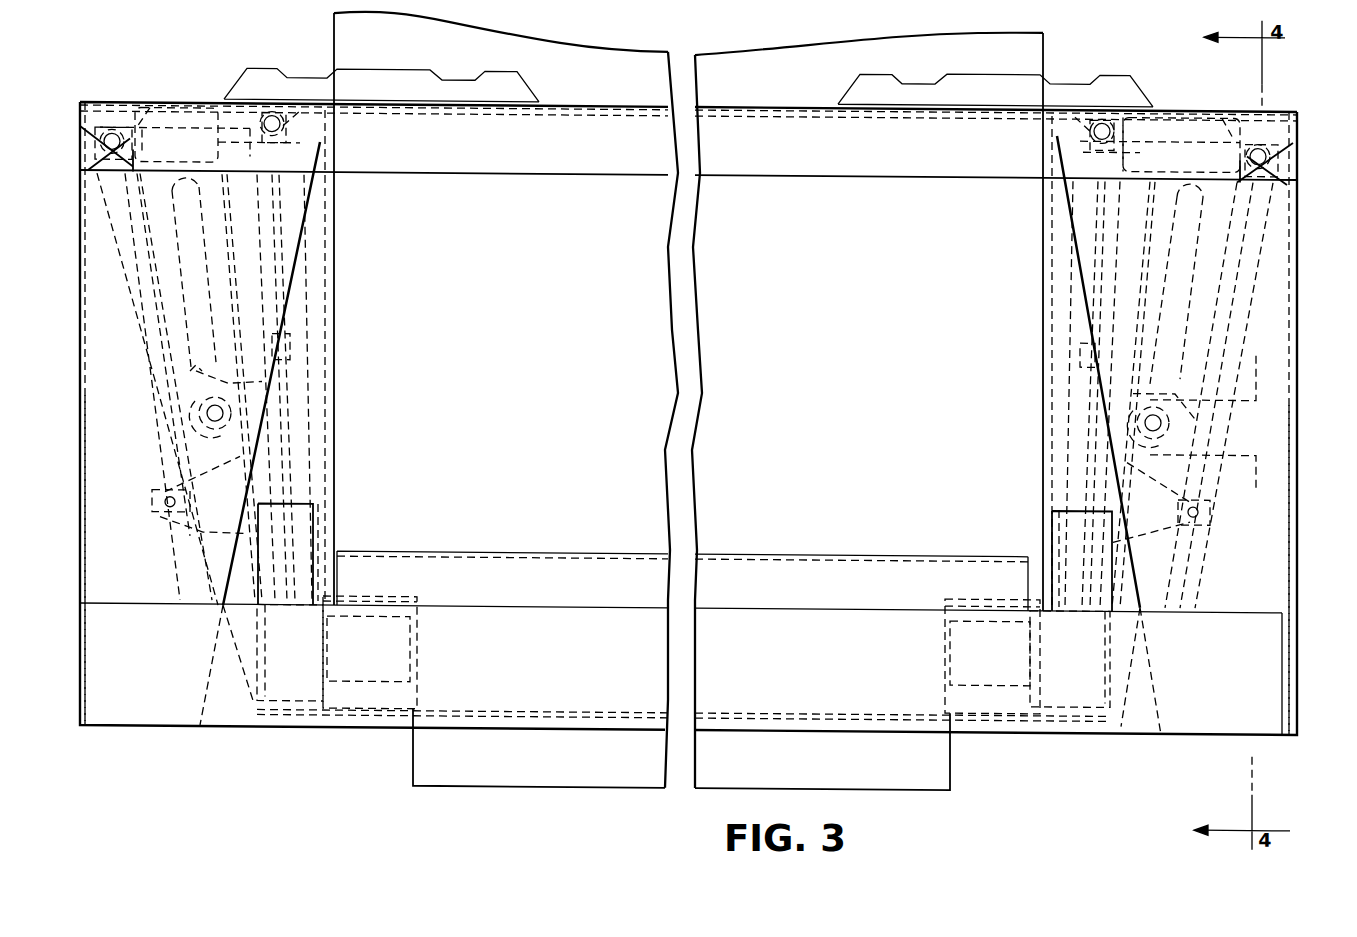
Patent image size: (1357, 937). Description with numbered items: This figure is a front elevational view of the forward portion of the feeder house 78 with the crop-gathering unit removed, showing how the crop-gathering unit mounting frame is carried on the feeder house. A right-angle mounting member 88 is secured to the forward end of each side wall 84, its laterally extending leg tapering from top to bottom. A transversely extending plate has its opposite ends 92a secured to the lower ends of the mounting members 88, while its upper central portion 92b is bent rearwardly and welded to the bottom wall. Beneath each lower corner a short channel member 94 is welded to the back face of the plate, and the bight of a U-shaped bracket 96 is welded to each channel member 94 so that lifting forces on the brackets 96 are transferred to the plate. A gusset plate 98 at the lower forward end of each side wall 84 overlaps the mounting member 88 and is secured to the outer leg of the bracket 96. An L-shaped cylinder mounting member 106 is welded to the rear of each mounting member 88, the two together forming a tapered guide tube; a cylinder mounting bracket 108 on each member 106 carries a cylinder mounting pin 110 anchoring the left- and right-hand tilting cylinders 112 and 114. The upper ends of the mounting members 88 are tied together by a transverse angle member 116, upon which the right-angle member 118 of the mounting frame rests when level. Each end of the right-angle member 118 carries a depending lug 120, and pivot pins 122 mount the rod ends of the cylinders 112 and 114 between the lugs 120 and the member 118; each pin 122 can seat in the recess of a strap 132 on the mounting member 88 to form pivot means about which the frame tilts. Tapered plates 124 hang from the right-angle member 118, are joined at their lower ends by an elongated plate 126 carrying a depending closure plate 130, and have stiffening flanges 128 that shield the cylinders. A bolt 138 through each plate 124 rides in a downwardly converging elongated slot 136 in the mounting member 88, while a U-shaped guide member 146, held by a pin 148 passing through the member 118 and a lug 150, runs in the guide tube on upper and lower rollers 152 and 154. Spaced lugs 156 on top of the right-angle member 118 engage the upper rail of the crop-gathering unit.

The feeder house 78 is at (1043, 33).
The side walls 84 is at (337, 55).
The right-angle mounting member 88 is at (312, 266).
The opposite ends of the transversely extending plate 92a is at (312, 527).
The upper central portion of the transversely extending plate 92b is at (830, 568).
The short channel member 94 is at (388, 678).
The U-shaped bracket 96 is at (386, 603).
The gusset plate 98 is at (322, 539).
The cylinder mounting member 106 is at (215, 164).
The cylinder mounting bracket 108 is at (192, 533).
The cylinder mounting pin 110 is at (152, 508).
The left-hand tilting cylinder 112 is at (1222, 486).
The right-hand tilting cylinder 114 is at (160, 474).
The angle member 116 is at (782, 118).
The right-angle member 118 is at (895, 176).
The depending lug 120 is at (95, 165).
The pivot pin 122 is at (100, 148).
The plate 124 is at (98, 563).
The elongated transversely extending plate 126 is at (1125, 728).
The rearwardly extending flange 128 is at (84, 530).
The closure plate 130 is at (585, 784).
The strap 132 is at (150, 112).
The elongated slot 136 is at (190, 372).
The bolt 138 is at (215, 425).
The U-shaped guide member 146 is at (262, 128).
The pin 148 is at (270, 119).
The lug 150 is at (300, 114).
The upper roller 152 is at (292, 358).
The lower roller 154 is at (683, 655).
The spaced lugs 156 is at (532, 98).